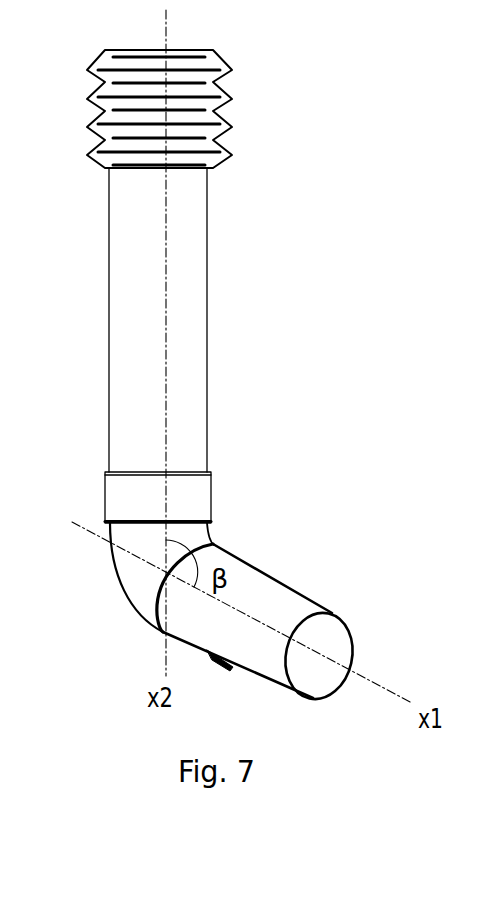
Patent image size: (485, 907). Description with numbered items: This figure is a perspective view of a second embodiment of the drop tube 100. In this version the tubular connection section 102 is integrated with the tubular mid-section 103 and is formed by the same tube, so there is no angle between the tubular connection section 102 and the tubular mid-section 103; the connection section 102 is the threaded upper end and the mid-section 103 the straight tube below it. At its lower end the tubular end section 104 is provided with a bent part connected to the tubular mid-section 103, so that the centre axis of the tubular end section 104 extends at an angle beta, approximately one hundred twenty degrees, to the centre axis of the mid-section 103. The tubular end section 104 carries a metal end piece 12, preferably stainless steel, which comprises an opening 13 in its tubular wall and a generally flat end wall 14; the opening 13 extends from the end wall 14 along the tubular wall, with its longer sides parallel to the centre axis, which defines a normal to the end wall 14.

The drop tube 100 is at (222, 227).
The tubular connection section 102 is at (220, 83).
The tubular mid-section 103 is at (183, 285).
The tubular end section 104 is at (150, 583).
The end piece 12 is at (260, 590).
The opening 13 is at (250, 675).
The end wall 14 is at (332, 621).